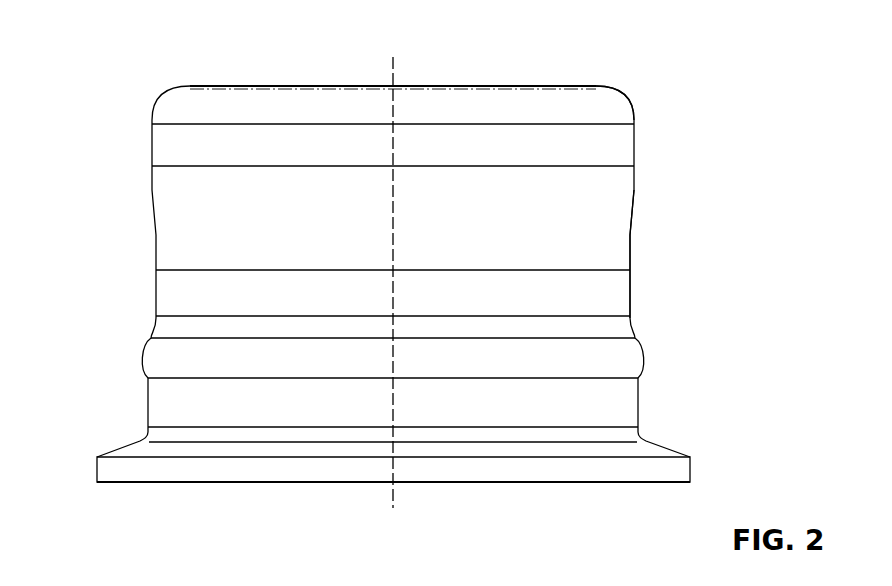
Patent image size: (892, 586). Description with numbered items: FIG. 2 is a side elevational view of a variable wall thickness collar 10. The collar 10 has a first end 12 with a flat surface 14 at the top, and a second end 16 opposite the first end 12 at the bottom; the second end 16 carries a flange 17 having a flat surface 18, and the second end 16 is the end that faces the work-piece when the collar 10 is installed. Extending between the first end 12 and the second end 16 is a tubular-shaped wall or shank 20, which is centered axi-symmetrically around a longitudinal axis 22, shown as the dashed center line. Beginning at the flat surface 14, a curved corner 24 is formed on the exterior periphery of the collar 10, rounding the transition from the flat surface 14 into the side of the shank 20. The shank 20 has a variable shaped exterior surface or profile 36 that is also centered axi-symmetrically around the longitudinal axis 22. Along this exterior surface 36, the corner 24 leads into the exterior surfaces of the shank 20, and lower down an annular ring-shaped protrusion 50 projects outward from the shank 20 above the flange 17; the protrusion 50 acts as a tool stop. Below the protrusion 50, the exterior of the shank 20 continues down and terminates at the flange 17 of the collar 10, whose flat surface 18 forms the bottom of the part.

The variable wall thickness collar 10 is at (108, 58).
The first end 12 is at (478, 78).
The flat surface 14 is at (578, 85).
The second end 16 is at (213, 497).
The flange 17 is at (685, 446).
The flat surface 18 is at (565, 485).
The shank 20 is at (642, 226).
The longitudinal axis 22 is at (392, 72).
The curved corner 24 is at (633, 102).
The exterior surface 36 is at (682, 273).
The protrusion 50 is at (646, 358).